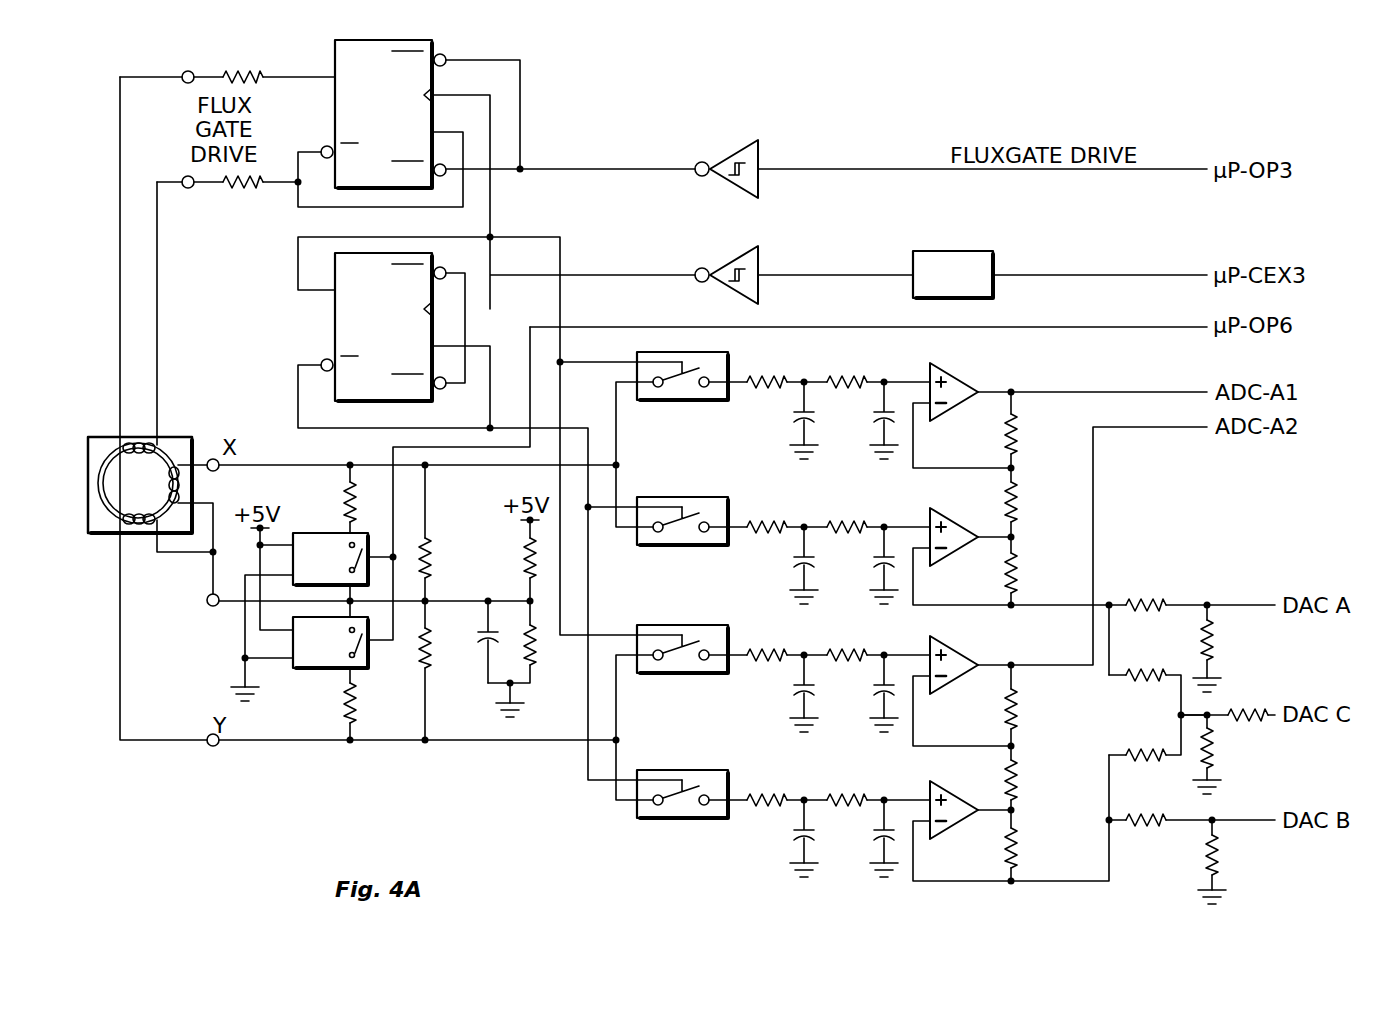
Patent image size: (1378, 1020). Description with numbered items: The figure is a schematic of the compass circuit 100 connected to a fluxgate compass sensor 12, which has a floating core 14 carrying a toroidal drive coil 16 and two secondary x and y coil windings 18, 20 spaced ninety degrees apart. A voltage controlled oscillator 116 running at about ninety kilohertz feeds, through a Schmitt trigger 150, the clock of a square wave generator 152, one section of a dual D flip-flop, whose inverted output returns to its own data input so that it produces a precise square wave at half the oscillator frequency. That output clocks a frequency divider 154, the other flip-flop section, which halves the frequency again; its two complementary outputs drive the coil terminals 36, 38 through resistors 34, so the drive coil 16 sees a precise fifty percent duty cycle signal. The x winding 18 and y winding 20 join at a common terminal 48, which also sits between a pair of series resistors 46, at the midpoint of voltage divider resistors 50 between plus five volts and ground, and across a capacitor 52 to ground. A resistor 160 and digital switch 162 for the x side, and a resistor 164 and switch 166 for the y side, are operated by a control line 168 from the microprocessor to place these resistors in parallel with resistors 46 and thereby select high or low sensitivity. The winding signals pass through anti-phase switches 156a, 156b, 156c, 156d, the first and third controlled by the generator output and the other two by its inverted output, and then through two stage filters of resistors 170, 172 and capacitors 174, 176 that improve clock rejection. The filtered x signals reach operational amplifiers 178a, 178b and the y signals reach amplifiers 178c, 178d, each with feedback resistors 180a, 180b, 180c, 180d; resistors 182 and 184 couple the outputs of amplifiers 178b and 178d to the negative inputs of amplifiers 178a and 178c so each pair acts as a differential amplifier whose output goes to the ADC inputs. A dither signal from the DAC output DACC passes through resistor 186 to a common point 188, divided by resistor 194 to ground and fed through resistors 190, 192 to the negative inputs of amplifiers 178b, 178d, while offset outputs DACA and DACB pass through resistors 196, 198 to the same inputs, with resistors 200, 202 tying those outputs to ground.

The fluxgate compass sensor 12 is at (175, 433).
The floating core 14 is at (108, 468).
The drive coil 16 is at (134, 441).
The x coil winding 18 is at (180, 486).
The y coil winding 20 is at (150, 532).
The resistor 34 is at (242, 69).
The terminal 36 is at (185, 69).
The terminal 38 is at (187, 189).
The resistor 46 is at (430, 544).
The common terminal 48 is at (206, 601).
The voltage divider resistor 50 is at (524, 572).
The capacitor 52 is at (483, 628).
The circuit 100 is at (967, 104).
The voltage controlled oscillator 116 is at (956, 251).
The Schmitt trigger 150 is at (759, 257).
The square wave generator 152 is at (335, 330).
The frequency divider 154 is at (335, 54).
The anti-phase switch 156a is at (664, 400).
The anti-phase switch 156b is at (664, 497).
The anti-phase switch 156c is at (664, 673).
The anti-phase switch 156d is at (666, 756).
The resistor 160 is at (344, 488).
The digital switch 162 is at (332, 533).
The resistor 164 is at (343, 720).
The switch 166 is at (331, 668).
The control line 168 is at (1077, 327).
The resistor 170 is at (762, 372).
The resistor 172 is at (842, 372).
The capacitor 174 is at (795, 415).
The capacitor 176 is at (878, 415).
The operational amplifier 178a is at (947, 374).
The operational amplifier 178b is at (937, 564).
The operational amplifier 178c is at (943, 647).
The operational amplifier 178d is at (937, 841).
The resistor 180a is at (1018, 424).
The resistor 180b is at (1018, 564).
The resistor 180c is at (1018, 701).
The resistor 180d is at (1018, 838).
The resistor 182 is at (1018, 493).
The resistor 184 is at (1018, 774).
The resistor 186 is at (1240, 706).
The common connection point 188 is at (1177, 714).
The resistor 190 is at (1140, 666).
The resistor 192 is at (1156, 748).
The resistor 194 is at (1214, 751).
The resistor 196 is at (1140, 598).
The resistor 198 is at (1161, 811).
The resistor 200 is at (1214, 629).
The resistor 202 is at (1221, 843).